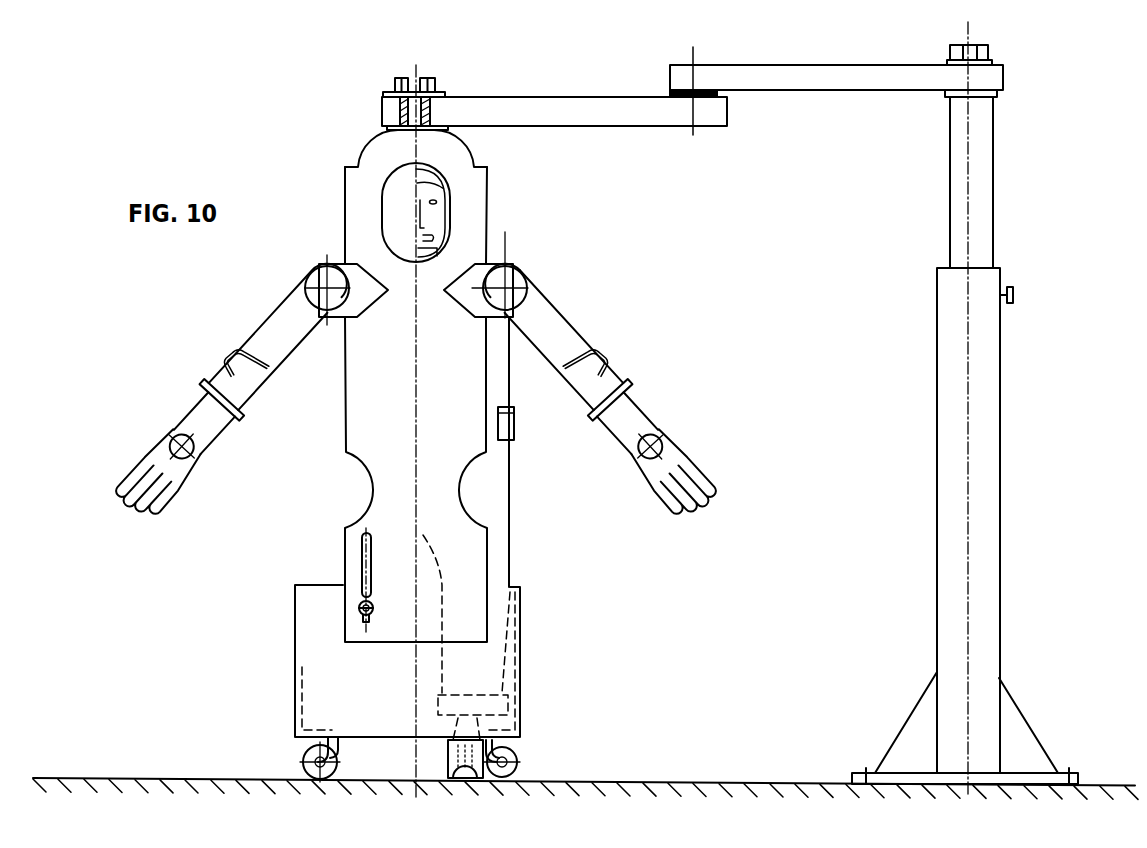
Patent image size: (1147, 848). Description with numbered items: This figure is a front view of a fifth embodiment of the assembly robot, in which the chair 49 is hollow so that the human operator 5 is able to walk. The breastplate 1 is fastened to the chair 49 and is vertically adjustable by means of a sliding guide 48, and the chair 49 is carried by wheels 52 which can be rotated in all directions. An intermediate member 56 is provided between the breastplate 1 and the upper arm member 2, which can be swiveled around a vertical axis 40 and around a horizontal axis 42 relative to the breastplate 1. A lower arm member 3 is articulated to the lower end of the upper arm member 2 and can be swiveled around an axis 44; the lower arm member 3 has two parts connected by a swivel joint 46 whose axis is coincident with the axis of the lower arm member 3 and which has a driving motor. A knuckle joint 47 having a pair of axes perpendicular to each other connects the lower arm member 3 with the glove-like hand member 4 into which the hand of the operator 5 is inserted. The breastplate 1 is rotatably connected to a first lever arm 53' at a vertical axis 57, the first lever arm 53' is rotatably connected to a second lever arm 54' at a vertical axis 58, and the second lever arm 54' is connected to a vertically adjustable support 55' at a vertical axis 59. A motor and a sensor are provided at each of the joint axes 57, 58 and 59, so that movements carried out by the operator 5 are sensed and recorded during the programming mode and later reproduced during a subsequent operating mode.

The breastplate 1 is at (475, 203).
The upper arm member 2 is at (550, 353).
The lower arm member 3 is at (612, 430).
The hand member 4 is at (697, 475).
The human operator 5 is at (502, 498).
The vertical axis 40 is at (505, 255).
The horizontal axis 42 is at (535, 288).
The axis 44 is at (607, 347).
The swivel joint 46 is at (635, 388).
The knuckle joint 47 is at (640, 460).
The sliding guide 48 is at (360, 560).
The chair 49 is at (522, 620).
The wheels 52 is at (518, 752).
The first lever arm 53' is at (554, 97).
The second lever arm 54' is at (836, 106).
The support 55' is at (965, 408).
The intermediate member 56 is at (517, 272).
The vertical axis 57 is at (418, 73).
The vertical axis 58 is at (690, 133).
The vertical axis 59 is at (972, 37).